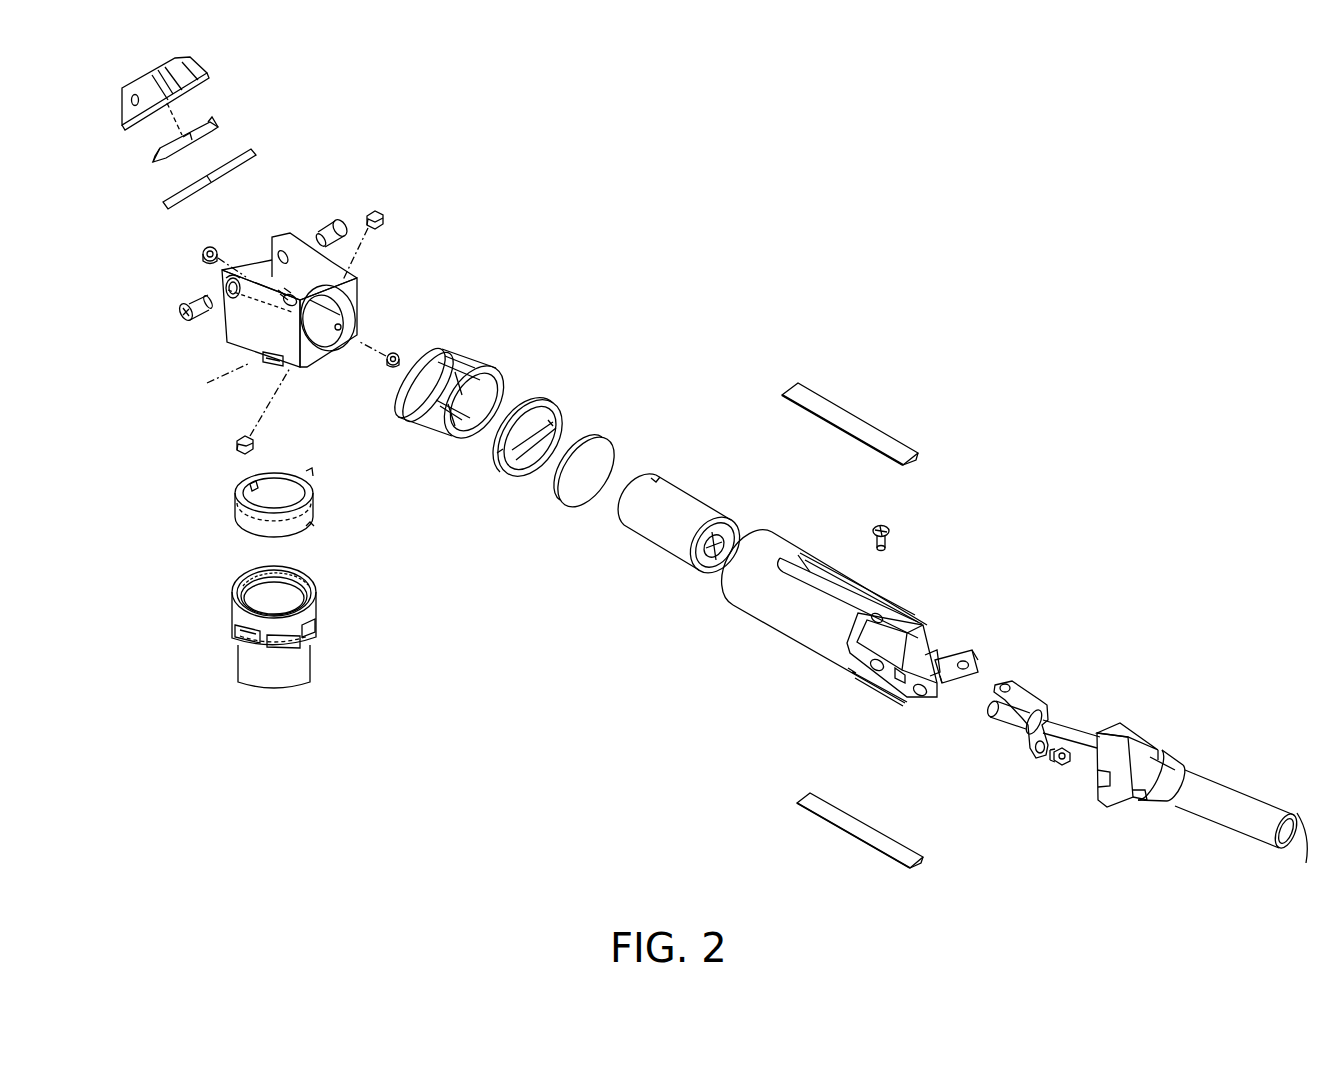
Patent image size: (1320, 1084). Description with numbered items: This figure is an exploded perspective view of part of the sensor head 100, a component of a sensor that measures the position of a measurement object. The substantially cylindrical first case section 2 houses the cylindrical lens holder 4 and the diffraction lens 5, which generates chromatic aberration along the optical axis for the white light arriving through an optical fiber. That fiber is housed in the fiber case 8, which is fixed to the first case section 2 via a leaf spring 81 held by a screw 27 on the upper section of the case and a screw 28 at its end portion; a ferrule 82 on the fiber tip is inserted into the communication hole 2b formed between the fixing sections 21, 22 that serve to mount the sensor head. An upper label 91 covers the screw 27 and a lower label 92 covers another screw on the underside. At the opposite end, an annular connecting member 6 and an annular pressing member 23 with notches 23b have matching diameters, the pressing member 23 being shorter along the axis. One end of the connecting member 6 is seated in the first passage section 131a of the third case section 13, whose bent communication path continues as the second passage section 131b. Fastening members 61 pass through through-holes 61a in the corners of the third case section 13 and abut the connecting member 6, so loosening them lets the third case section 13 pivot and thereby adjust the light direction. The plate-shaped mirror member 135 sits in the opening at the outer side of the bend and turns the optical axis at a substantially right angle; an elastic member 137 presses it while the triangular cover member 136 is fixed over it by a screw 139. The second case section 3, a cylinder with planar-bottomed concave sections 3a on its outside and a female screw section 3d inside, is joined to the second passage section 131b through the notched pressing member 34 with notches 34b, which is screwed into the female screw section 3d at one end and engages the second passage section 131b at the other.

The sensor head 100 is at (748, 352).
The first case section 2 is at (841, 669).
The communication hole 2b is at (937, 652).
The fixing section 21 is at (900, 673).
The fixing section 22 is at (943, 650).
The pressing member 23 is at (539, 426).
The notches 23b is at (548, 424).
The screw 27 is at (892, 518).
The screw 28 is at (1058, 770).
The second case section 3 is at (264, 638).
The concave sections 3a is at (290, 650).
The female screw section 3d is at (288, 583).
The pressing member 34 is at (279, 493).
The notches 34b is at (252, 490).
The lens holder 4 is at (666, 555).
The diffraction lens 5 is at (560, 501).
The connecting member 6 is at (475, 352).
The fastening members 61 is at (203, 253).
The through-holes 61a is at (305, 300).
The third case section 13 is at (310, 326).
The first passage section 131a is at (350, 303).
The second passage section 131b is at (205, 391).
The mirror member 135 is at (245, 160).
The cover member 136 is at (195, 57).
The elastic member 137 is at (215, 112).
The screw 139 is at (330, 226).
The fiber case 8 is at (1142, 775).
The leaf spring 81 is at (1027, 697).
The ferrule 82 is at (1003, 727).
The upper label 91 is at (856, 412).
The lower label 92 is at (843, 838).